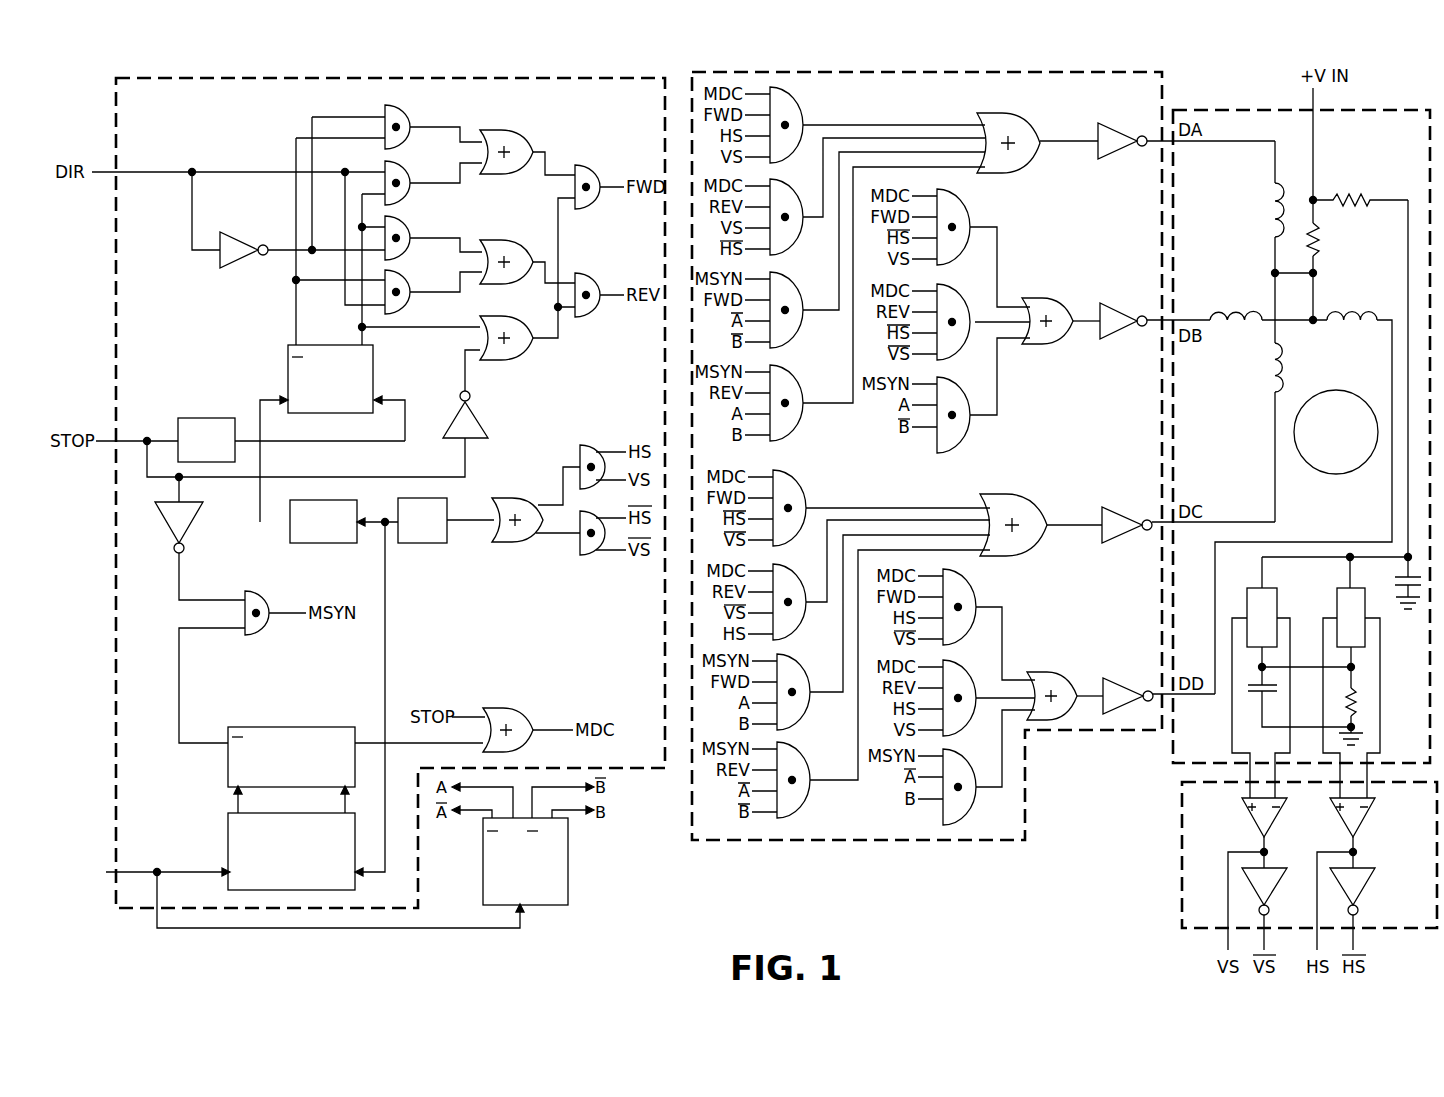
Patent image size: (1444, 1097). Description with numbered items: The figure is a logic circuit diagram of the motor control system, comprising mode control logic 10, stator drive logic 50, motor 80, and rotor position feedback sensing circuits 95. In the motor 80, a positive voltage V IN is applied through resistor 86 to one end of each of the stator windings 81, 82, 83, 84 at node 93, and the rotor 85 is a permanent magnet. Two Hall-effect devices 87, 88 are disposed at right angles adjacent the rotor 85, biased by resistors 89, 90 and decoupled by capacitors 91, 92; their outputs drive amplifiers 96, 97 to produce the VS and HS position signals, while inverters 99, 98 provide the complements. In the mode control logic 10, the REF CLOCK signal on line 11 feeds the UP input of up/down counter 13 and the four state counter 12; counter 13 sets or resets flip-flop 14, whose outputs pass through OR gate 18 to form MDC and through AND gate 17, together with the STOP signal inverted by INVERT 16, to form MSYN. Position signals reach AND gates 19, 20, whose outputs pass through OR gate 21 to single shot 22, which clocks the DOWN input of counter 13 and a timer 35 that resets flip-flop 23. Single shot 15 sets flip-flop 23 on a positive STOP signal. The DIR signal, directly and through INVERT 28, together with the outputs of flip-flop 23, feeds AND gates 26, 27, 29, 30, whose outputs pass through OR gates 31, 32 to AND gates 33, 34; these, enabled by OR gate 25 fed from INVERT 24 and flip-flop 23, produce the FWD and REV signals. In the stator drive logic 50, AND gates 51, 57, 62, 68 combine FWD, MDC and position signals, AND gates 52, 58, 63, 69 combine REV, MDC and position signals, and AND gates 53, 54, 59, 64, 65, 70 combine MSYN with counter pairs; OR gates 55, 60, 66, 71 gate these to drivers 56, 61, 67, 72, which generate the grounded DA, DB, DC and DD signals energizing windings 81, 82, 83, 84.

The mode control logic 10 is at (209, 122).
The line 11 is at (160, 870).
The 4 state counter 12 is at (570, 876).
The up/down counter 13 is at (228, 831).
The flip-flop 14 is at (290, 724).
The single shot 15 is at (184, 418).
The INVERT 16 is at (186, 518).
The AND gate 17 is at (259, 600).
The OR gate 18 is at (506, 713).
The AND gate 19 is at (579, 556).
The AND gate 20 is at (596, 444).
The OR gate 21 is at (514, 497).
The single shot 22 is at (447, 544).
The flip-flop 23 is at (288, 380).
The INVERT 24 is at (472, 410).
The OR gate 25 is at (518, 325).
The AND gate 26 is at (405, 282).
The AND gate 27 is at (405, 228).
The INVERT 28 is at (235, 243).
The AND gate 29 is at (405, 115).
The AND gate 30 is at (405, 173).
The OR gate 31 is at (509, 138).
The OR gate 32 is at (497, 244).
The AND gate 33 is at (589, 170).
The AND gate 34 is at (589, 278).
The timer 35 is at (290, 546).
The stator drive logic 50 is at (941, 102).
The AND gate 51 is at (795, 115).
The AND gate 52 is at (792, 204).
The AND gate 53 is at (793, 297).
The AND gate 54 is at (803, 390).
The OR gate 55 is at (1030, 120).
The DRIVER 56 is at (1121, 131).
The AND gate 57 is at (966, 216).
The AND gate 58 is at (967, 310).
The AND gate 59 is at (965, 405).
The OR gate 60 is at (1052, 308).
The DRIVER 61 is at (1125, 312).
The AND gate 62 is at (800, 493).
The AND gate 63 is at (795, 575).
The AND gate 64 is at (797, 668).
The AND gate 65 is at (806, 760).
The OR gate 66 is at (1033, 505).
The DRIVER 67 is at (1128, 515).
The AND gate 68 is at (970, 590).
The AND gate 69 is at (958, 668).
The AND gate 70 is at (962, 760).
The OR gate 71 is at (1052, 672).
The DRIVER 72 is at (1128, 687).
The motor 80 is at (1391, 152).
The stator winding 81 is at (1273, 214).
The stator winding 82 is at (1235, 306).
The stator winding 83 is at (1273, 366).
The stator winding 84 is at (1358, 306).
The rotor 85 is at (1350, 397).
The resistor 86 is at (1320, 240).
The Hall-effect device 87 is at (1247, 610).
The Hall-effect device 88 is at (1341, 610).
The resistor 89 is at (1369, 212).
The resistor 90 is at (1358, 702).
The capacitor 91 is at (1398, 582).
The capacitor 92 is at (1254, 696).
The node 93 is at (1315, 325).
The rotor position feedback sensing circuits 95 is at (1221, 822).
The amplifier 96 is at (1273, 823).
The amplifier 97 is at (1365, 823).
The inverter 98 is at (1366, 895).
The inverter 99 is at (1278, 895).